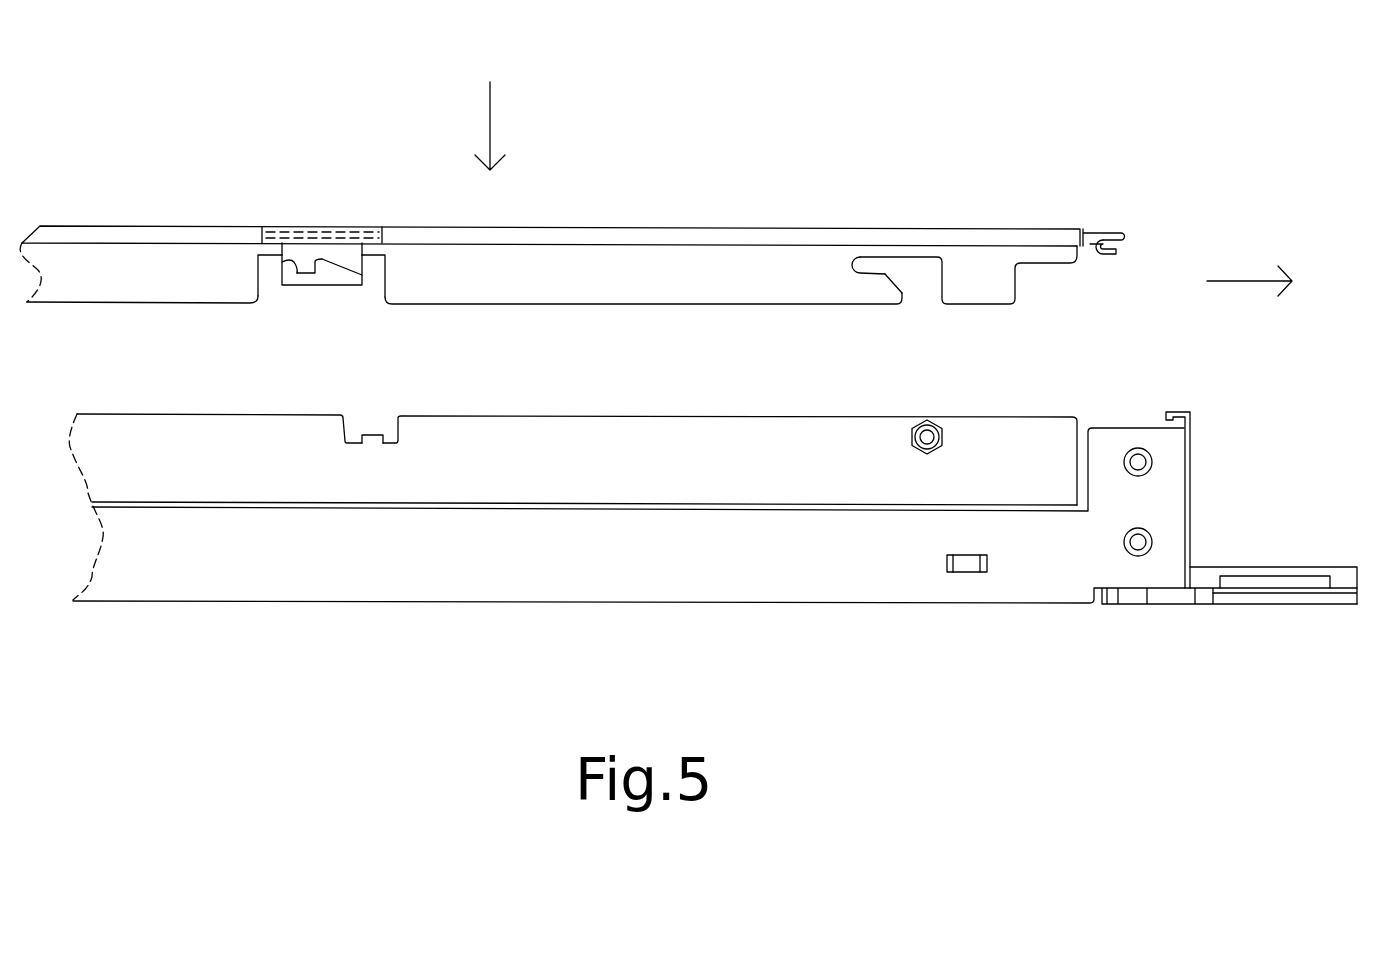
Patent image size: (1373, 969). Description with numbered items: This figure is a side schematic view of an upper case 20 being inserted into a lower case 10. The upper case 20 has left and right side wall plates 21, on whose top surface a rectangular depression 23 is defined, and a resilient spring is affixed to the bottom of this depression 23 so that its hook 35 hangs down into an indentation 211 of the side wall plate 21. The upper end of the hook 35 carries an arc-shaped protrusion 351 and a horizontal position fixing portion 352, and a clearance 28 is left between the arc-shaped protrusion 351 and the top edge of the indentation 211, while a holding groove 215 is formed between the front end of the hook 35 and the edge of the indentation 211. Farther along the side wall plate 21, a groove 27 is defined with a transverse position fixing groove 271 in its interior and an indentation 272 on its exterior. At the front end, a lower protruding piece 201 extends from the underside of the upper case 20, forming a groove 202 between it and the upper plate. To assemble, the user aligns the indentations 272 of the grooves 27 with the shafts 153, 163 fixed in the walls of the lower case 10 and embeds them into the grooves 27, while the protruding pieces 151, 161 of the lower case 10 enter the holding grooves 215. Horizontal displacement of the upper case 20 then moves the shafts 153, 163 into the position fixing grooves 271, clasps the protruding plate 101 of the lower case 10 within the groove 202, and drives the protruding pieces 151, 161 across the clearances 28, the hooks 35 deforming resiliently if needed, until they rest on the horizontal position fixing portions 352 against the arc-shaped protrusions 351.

The lower case 10 is at (713, 523).
The protruding plate 101 is at (1173, 413).
The protruding piece 151 is at (455, 408).
The protruding piece 161 is at (372, 433).
The shaft 153 is at (1016, 410).
The shaft 163 is at (938, 428).
The upper case 20 is at (637, 223).
The side wall plate 21 is at (740, 263).
The indentation 211 is at (310, 298).
The holding groove 215 is at (372, 267).
The rectangular depression 23 is at (308, 228).
The clearance 28 is at (322, 258).
The hook 35 is at (294, 317).
The arc-shaped protrusion 351 is at (323, 273).
The horizontal position fixing portion 352 is at (283, 262).
The groove 27 is at (964, 258).
The position fixing groove 271 is at (860, 263).
The indentation 272 is at (923, 290).
The lower protruding piece 201 is at (1105, 253).
The groove 202 is at (1099, 245).